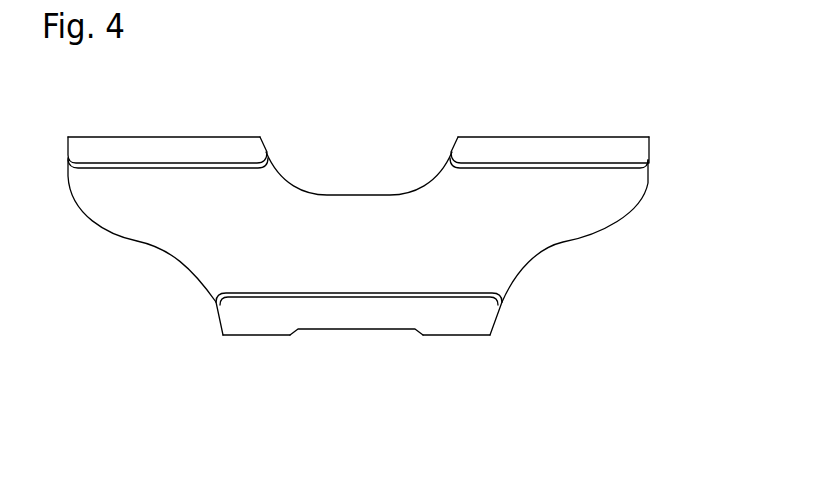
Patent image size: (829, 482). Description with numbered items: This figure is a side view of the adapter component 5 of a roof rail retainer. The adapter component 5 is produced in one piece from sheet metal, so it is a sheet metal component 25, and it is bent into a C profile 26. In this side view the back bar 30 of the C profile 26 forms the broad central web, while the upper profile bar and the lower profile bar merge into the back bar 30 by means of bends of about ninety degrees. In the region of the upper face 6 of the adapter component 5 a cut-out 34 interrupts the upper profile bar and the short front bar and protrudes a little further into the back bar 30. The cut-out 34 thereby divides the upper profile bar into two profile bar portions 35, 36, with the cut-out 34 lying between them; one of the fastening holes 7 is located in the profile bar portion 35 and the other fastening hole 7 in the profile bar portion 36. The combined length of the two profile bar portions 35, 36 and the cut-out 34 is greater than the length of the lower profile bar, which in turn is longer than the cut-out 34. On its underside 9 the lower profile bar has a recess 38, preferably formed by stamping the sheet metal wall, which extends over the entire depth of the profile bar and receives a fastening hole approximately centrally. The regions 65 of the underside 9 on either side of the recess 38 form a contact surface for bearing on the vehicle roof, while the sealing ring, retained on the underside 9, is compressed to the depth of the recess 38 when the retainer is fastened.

The adapter component 5 is at (411, 226).
The sheet metal component 25 is at (411, 226).
The C profile 26 is at (649, 114).
The fastening holes 7 is at (118, 137).
The profile bar portion 35 is at (170, 137).
The upper face 6 is at (222, 137).
The cut-out 34 is at (357, 188).
The profile bar portion 36 is at (516, 137).
The back bar 30 is at (218, 230).
The underside 9 is at (280, 338).
The regions 65 is at (254, 338).
The recess 38 is at (357, 330).